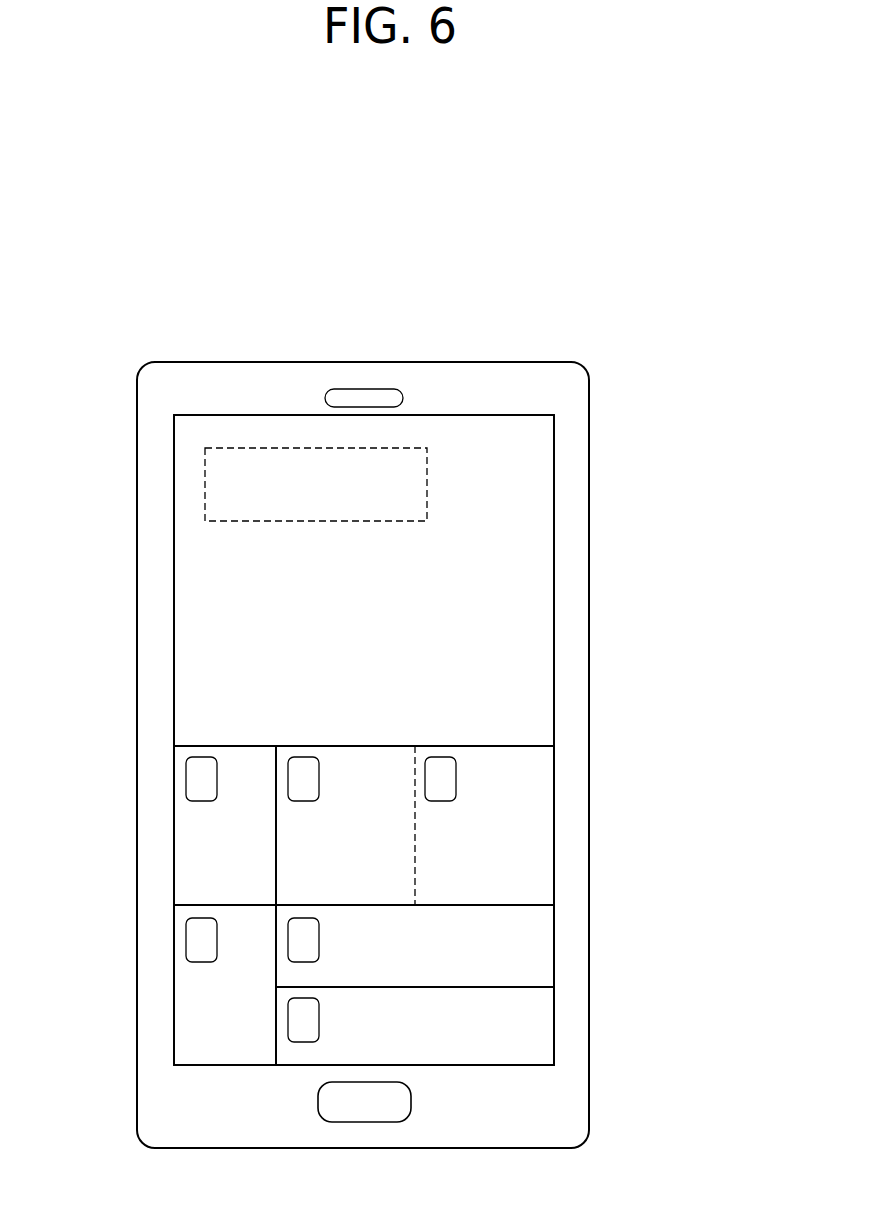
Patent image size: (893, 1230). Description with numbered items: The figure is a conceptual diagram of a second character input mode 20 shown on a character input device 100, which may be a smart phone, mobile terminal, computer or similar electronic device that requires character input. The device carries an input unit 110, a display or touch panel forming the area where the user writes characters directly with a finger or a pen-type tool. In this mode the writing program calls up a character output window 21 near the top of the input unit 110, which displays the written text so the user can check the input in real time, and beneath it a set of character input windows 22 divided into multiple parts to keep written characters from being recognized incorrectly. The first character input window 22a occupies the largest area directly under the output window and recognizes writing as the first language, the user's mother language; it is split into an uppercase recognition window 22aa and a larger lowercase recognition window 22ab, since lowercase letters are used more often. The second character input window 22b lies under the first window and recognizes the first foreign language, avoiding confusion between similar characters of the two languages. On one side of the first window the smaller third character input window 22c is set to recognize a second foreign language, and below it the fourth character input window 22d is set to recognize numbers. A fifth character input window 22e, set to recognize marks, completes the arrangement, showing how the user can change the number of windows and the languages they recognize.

The character input device 100 is at (484, 362).
The input unit 110 is at (258, 430).
The second character input mode 20 is at (364, 740).
The character output window 21 is at (205, 480).
The character input windows 22 is at (155, 725).
The first character input window 22a is at (513, 825).
The uppercase recognition window 22aa is at (386, 860).
The lowercase recognition window 22ab is at (526, 817).
The second character input window 22b is at (526, 944).
The third character input window 22c is at (202, 845).
The fourth character input window 22d is at (202, 998).
The fifth character input window 22e is at (526, 1020).